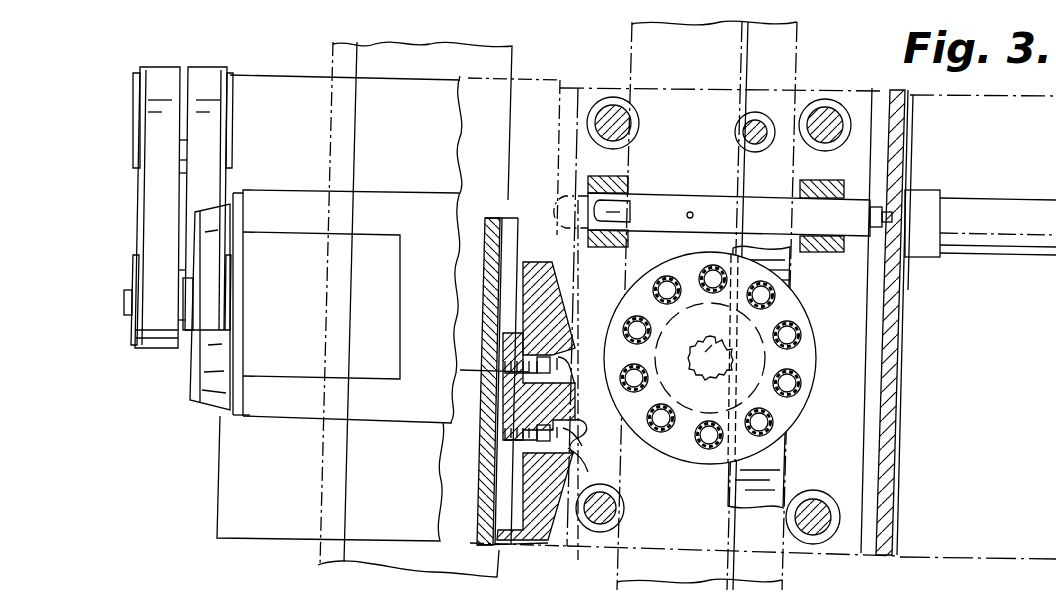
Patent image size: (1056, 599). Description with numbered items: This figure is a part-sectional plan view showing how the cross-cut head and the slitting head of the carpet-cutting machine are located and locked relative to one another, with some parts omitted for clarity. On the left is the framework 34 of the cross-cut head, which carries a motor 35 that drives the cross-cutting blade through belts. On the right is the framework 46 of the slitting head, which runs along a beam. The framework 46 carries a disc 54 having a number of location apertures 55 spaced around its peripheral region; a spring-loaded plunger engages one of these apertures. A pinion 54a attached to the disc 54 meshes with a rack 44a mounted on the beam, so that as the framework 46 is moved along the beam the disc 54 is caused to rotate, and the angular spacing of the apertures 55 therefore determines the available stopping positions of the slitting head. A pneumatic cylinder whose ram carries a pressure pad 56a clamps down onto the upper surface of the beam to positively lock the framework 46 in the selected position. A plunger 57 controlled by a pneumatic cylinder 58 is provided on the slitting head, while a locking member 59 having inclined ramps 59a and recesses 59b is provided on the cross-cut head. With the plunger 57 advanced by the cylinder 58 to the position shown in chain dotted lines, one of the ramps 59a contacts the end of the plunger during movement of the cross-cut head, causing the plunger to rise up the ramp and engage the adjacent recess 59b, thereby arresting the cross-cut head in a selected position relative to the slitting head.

The framework 34 is at (291, 494).
The motor 35 is at (297, 407).
The rack 44a is at (772, 478).
The framework 46 is at (893, 396).
The disc 54 is at (803, 362).
The pinion 54a is at (706, 366).
The location apertures 55 is at (793, 334).
The pressure pad 56a is at (748, 142).
The plunger 57 is at (654, 224).
The pneumatic cylinder 58 is at (1012, 222).
The locking member 59 is at (530, 322).
The inclined ramps 59a is at (556, 292).
The recesses 59b is at (574, 434).